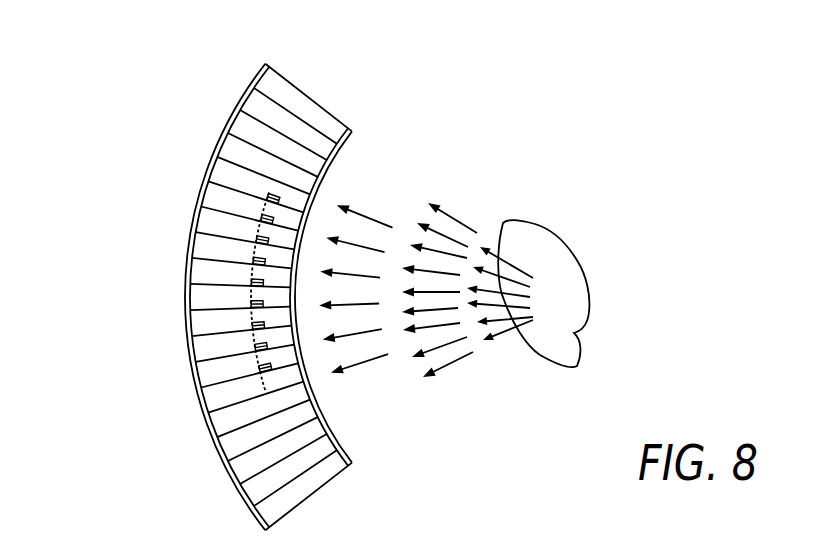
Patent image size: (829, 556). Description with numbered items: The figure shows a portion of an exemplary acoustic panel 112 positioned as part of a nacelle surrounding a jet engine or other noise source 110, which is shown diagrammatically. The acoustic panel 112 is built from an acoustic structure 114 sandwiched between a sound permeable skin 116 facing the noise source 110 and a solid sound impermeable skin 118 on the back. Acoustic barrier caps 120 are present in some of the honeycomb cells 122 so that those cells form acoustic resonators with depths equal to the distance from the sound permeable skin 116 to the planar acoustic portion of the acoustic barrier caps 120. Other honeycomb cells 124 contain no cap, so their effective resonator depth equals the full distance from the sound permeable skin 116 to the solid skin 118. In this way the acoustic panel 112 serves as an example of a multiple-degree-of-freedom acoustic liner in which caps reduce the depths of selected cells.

The noise source 110 is at (553, 272).
The acoustic panel 112 is at (198, 455).
The acoustic structure 114 is at (317, 97).
The sound permeable skin 116 is at (323, 155).
The solid sound impermeable skin 118 is at (188, 352).
The acoustic barrier caps 120 is at (262, 258).
The honeycomb cells 122 is at (200, 320).
The honeycomb cells 124 is at (227, 170).